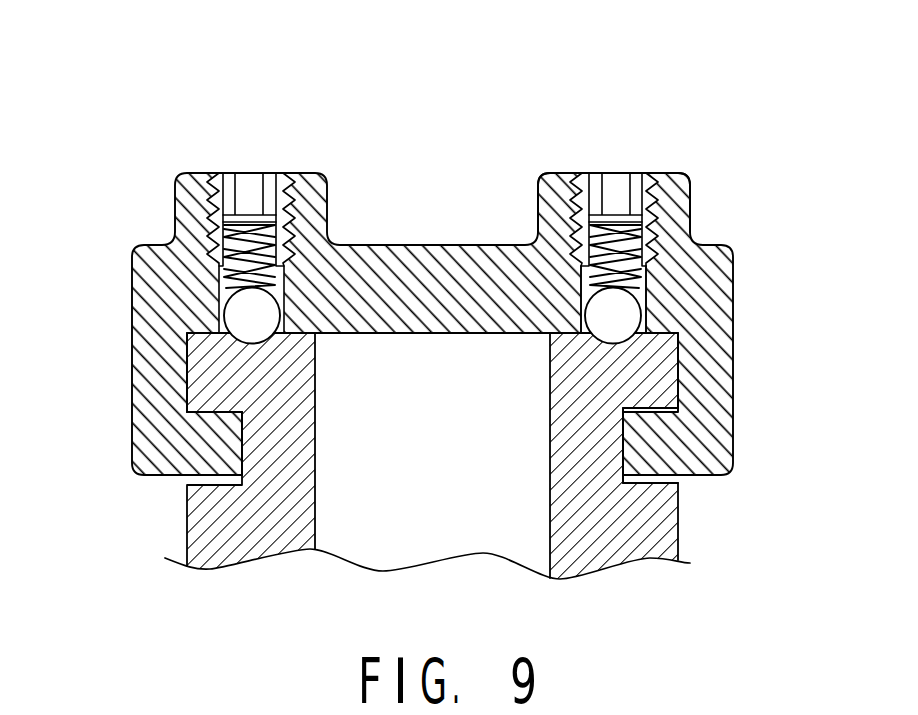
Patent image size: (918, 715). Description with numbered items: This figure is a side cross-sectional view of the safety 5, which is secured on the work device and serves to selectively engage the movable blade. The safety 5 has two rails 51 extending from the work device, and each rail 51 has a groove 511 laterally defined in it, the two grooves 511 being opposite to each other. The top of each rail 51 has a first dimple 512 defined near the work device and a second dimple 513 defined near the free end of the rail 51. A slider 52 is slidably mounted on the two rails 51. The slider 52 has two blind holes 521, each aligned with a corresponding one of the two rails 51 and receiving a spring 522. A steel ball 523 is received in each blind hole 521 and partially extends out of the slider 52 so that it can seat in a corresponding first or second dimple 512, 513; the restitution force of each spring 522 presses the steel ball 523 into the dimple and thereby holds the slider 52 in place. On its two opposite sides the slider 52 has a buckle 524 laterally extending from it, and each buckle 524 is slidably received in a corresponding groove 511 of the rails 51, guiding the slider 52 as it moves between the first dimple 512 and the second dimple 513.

The safety 5 is at (454, 295).
The rail 51 is at (493, 449).
The groove 511 is at (653, 476).
The first dimple 512 is at (638, 275).
The second dimple 513 is at (613, 316).
The slider 52 is at (454, 291).
The blind hole 521 is at (697, 243).
The spring 522 is at (255, 207).
The steel ball 523 is at (237, 317).
The buckle 524 is at (225, 435).